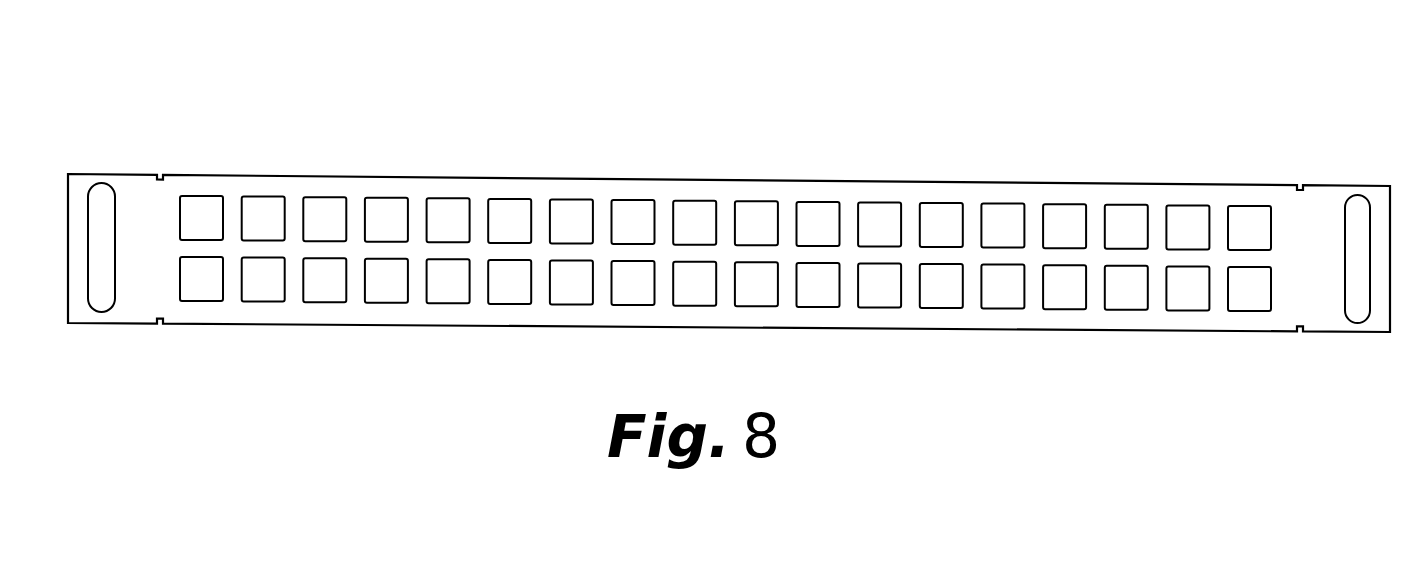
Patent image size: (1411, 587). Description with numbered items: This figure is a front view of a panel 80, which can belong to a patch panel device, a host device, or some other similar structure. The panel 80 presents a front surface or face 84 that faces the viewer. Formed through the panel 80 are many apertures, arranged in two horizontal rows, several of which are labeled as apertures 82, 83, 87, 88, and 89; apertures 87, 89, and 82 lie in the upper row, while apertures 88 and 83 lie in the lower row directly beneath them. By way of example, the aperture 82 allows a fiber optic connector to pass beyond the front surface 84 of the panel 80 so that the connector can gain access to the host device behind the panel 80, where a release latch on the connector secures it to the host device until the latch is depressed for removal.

The panel 80 is at (236, 175).
The front surface 84 is at (453, 187).
The aperture 87 is at (180, 217).
The aperture 89 is at (242, 222).
The aperture 82 is at (303, 222).
The aperture 88 is at (180, 277).
The aperture 83 is at (242, 277).